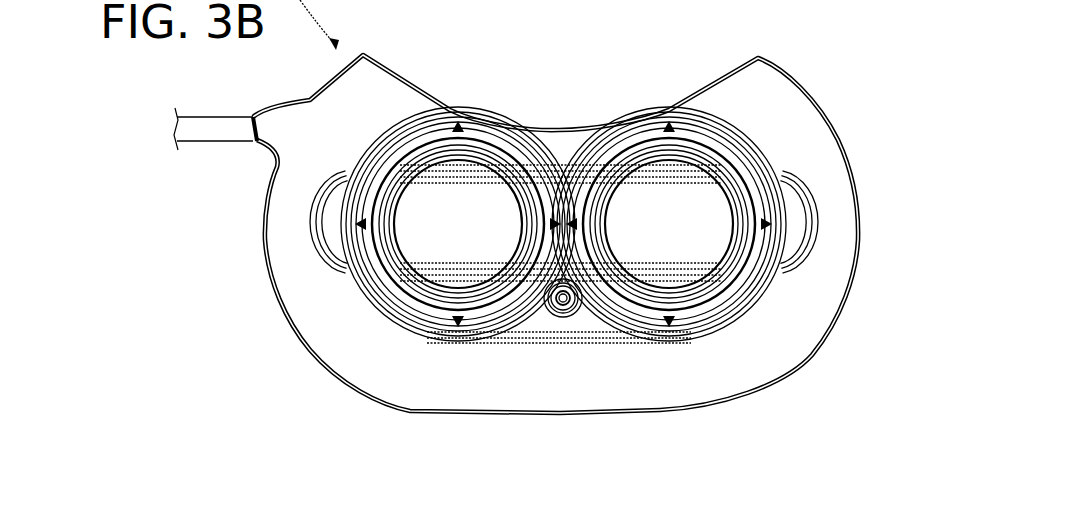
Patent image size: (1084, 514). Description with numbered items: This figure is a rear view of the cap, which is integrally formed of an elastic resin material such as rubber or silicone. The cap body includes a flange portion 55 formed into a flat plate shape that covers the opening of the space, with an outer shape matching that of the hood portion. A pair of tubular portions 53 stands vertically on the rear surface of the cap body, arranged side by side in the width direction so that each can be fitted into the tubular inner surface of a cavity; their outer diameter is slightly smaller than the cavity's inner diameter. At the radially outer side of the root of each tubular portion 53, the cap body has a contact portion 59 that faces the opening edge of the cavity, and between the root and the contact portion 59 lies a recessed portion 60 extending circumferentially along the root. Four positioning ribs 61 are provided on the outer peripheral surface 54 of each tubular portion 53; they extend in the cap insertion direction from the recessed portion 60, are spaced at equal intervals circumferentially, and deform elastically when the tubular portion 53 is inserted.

The tubular portion 53 is at (376, 171).
The outer peripheral surface 54 is at (500, 147).
The flange portion 55 is at (803, 128).
The contact portion 59 is at (377, 308).
The recessed portion 60 is at (360, 168).
The positioning rib 61 is at (446, 122).